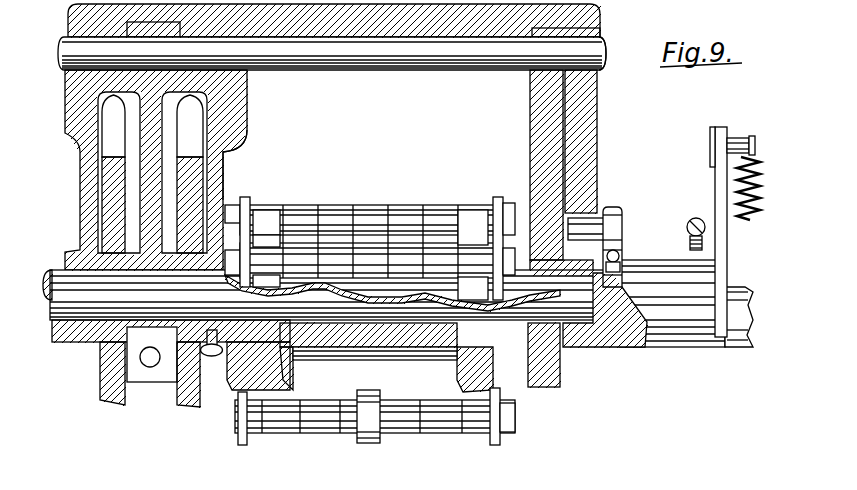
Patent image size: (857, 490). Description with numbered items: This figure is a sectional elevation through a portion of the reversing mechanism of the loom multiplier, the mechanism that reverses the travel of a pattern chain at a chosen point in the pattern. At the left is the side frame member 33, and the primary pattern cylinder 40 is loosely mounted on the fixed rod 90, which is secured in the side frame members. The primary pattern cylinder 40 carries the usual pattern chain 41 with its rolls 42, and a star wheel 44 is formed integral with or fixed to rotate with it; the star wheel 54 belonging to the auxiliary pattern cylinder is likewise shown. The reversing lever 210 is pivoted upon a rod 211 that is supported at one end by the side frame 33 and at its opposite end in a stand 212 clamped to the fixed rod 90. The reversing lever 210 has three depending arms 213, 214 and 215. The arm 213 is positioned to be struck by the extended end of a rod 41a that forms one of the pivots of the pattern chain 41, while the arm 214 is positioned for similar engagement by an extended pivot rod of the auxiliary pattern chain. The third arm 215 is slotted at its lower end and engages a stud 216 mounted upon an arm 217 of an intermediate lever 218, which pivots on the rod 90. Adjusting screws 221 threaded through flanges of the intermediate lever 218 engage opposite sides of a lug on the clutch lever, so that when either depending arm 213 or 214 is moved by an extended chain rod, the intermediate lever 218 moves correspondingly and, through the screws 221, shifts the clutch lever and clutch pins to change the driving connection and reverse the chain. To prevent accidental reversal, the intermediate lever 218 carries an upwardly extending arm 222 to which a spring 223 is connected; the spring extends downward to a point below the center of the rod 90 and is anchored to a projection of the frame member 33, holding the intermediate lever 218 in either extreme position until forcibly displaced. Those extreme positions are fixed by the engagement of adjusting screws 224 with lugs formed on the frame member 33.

The side frame member 33 is at (530, 120).
The primary pattern cylinder 40 is at (460, 362).
The pattern chain 41 is at (246, 442).
The rod 41a is at (228, 242).
The rolls 42 is at (380, 442).
The star wheel 44 is at (178, 398).
The star wheel 54 is at (100, 395).
The rod 90 is at (570, 343).
The reversing lever 210 is at (281, 40).
The rod 211 is at (606, 45).
The stand 212 is at (127, 74).
The depending arm 213 is at (224, 148).
The depending arm 214 is at (76, 130).
The third arm 215 is at (600, 122).
The stud 216 is at (600, 220).
The arm 217 is at (618, 235).
The intermediate lever 218 is at (634, 345).
The adjusting screws 221 is at (666, 262).
The upwardly extending arm 222 is at (722, 135).
The spring 223 is at (748, 162).
The adjusting screws 224 is at (620, 257).